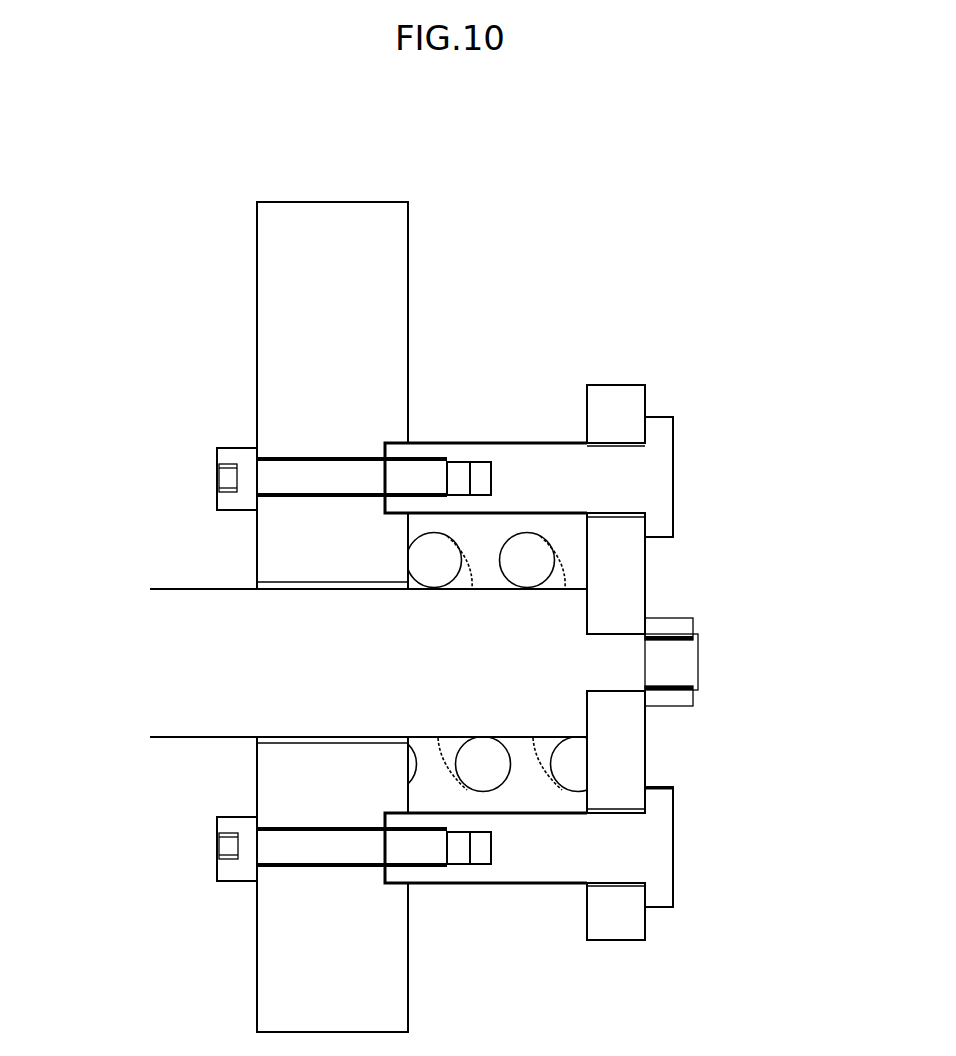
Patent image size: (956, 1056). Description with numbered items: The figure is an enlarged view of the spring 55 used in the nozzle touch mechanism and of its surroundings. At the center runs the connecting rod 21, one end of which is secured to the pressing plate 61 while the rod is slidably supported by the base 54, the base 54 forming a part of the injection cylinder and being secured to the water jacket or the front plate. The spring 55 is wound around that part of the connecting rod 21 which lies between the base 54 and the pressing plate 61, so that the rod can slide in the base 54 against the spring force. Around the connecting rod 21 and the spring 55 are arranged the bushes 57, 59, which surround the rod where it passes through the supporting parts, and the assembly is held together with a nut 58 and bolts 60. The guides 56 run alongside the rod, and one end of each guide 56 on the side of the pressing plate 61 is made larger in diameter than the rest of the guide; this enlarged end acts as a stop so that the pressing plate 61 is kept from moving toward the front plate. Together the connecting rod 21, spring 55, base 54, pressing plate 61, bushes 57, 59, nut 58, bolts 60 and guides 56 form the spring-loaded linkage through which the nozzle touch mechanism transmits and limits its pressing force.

The connecting rod 21 is at (165, 737).
The base 54 is at (380, 200).
The spring 55 is at (550, 540).
The guides 56 is at (462, 463).
The bush 57 is at (612, 435).
The nut 58 is at (675, 617).
The bush 59 is at (280, 582).
The bolts 60 is at (242, 448).
The pressing plate 61 is at (640, 758).